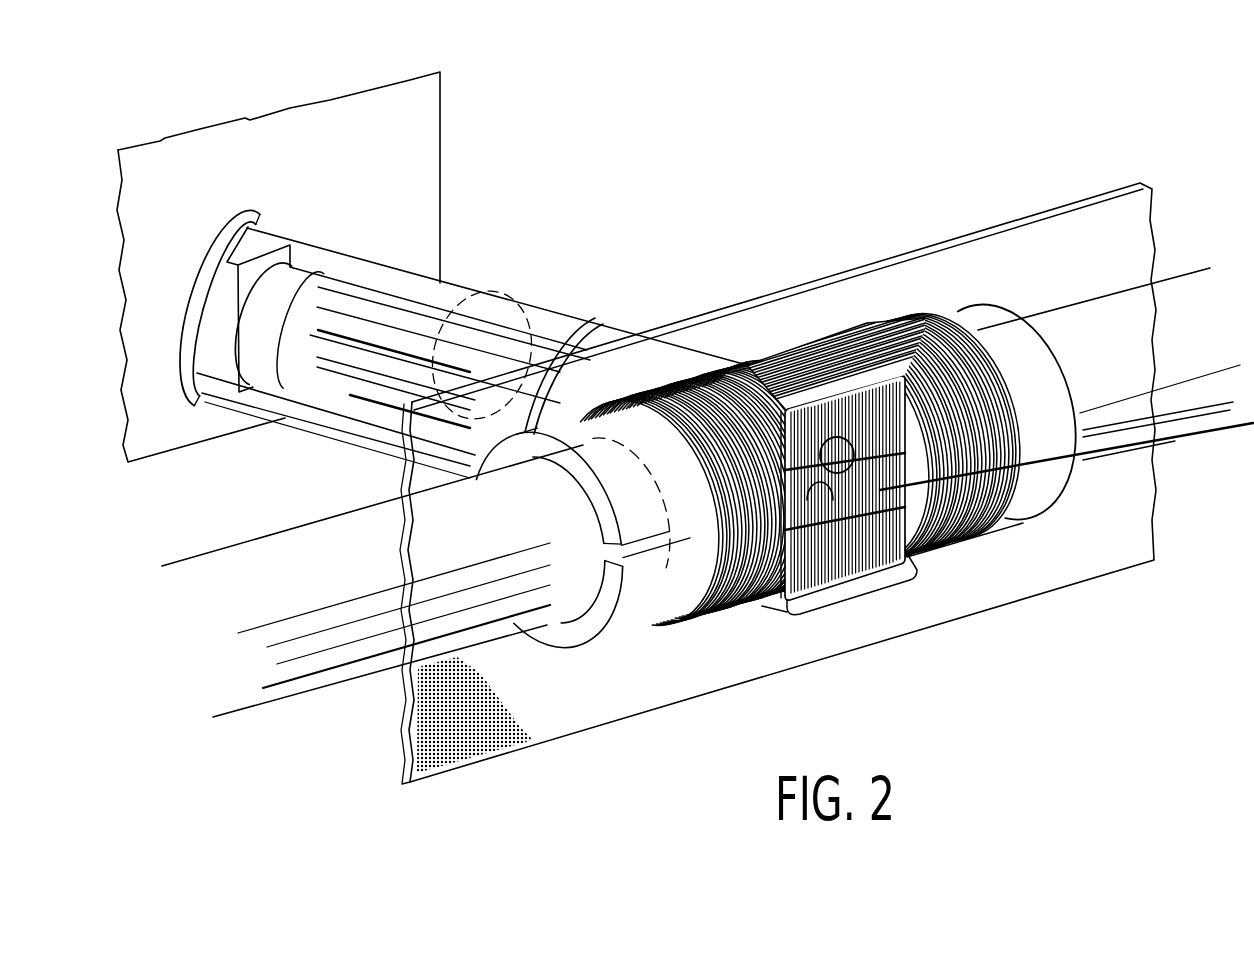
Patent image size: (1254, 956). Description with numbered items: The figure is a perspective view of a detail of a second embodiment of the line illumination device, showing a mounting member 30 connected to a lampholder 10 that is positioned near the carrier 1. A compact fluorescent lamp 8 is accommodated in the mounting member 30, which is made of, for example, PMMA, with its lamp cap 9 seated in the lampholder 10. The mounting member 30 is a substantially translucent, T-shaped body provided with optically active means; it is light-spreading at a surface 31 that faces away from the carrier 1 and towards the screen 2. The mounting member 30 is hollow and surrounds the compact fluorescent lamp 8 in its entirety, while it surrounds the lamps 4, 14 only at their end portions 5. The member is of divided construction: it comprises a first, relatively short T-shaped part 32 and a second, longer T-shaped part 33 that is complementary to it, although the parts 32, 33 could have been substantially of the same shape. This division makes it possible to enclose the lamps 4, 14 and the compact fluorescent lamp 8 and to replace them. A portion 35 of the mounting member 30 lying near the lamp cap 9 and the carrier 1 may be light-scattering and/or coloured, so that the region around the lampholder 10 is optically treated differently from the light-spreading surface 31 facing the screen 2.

The carrier 1 is at (415, 122).
The screen 2 is at (548, 723).
The lamp 4 is at (307, 547).
The end portions 5 is at (633, 577).
The compact fluorescent lamp 8 is at (427, 322).
The lamp cap 9 is at (300, 277).
The lampholder 10 is at (262, 247).
The lamp 14 is at (1183, 317).
The mounting member 30 is at (540, 316).
The surface 31 is at (1023, 523).
The first part 32 is at (597, 498).
The second part 33 is at (560, 637).
The portion 35 is at (505, 290).